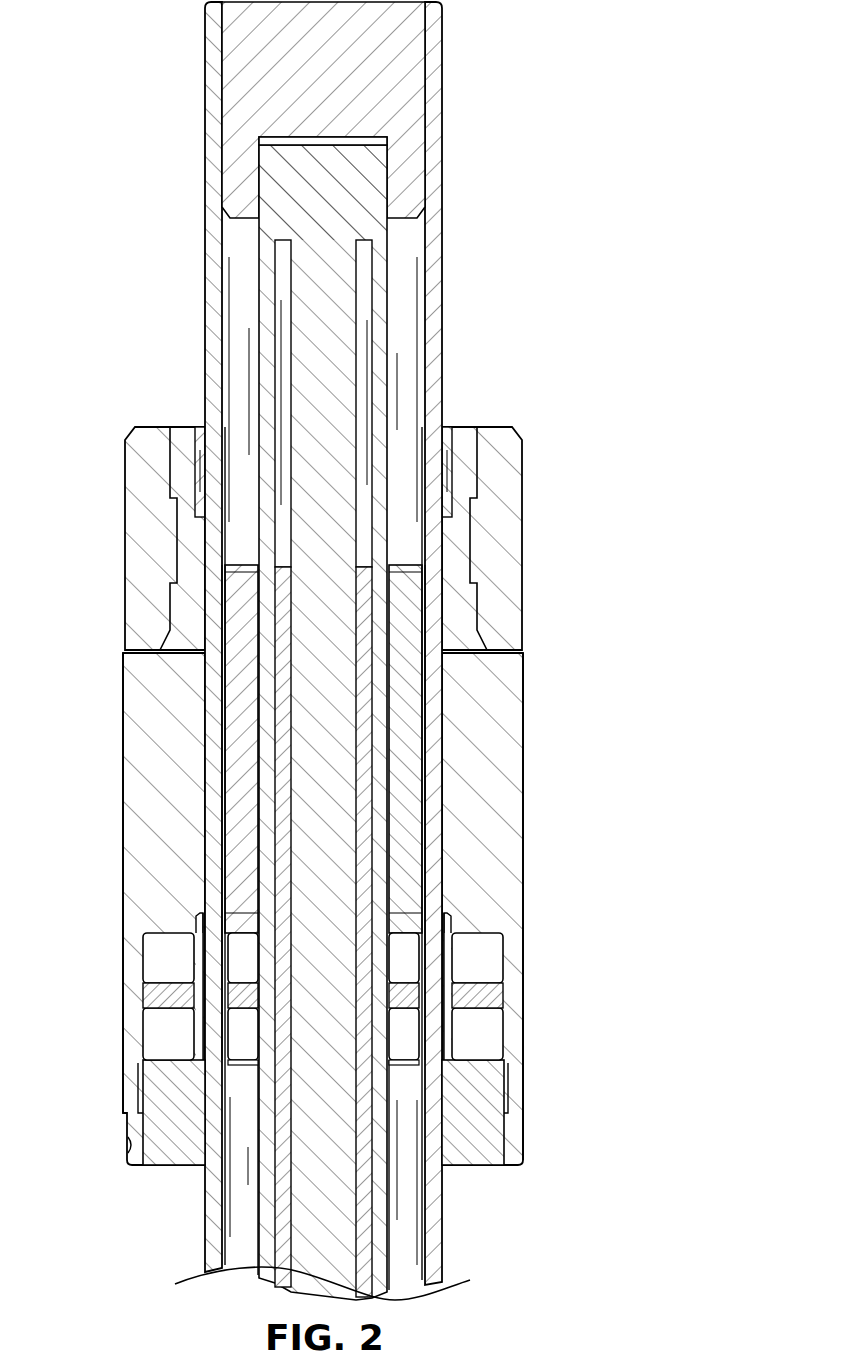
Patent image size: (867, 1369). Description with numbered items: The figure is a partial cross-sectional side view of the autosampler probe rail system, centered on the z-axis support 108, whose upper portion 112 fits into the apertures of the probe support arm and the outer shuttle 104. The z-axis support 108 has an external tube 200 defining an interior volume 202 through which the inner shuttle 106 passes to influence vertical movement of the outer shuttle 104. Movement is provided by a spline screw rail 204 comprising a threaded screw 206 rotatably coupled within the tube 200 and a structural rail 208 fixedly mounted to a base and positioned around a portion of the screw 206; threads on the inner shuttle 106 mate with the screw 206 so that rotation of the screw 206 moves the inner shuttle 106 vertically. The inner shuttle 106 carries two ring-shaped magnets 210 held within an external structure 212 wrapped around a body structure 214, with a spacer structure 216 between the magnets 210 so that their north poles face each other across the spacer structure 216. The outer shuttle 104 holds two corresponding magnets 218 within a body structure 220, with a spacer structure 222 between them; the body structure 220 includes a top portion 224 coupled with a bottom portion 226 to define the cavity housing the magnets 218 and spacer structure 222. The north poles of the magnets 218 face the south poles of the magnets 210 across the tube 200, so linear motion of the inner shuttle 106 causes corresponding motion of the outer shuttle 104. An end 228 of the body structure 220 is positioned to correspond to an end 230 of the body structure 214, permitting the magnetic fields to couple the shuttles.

The outer shuttle 104 is at (123, 722).
The inner shuttle 106 is at (237, 612).
The z-axis support 108 is at (205, 233).
The upper portion 112 is at (408, 23).
The external tube 200 is at (432, 327).
The interior volume 202 is at (408, 240).
The spline screw rail 204 is at (360, 213).
The threaded screw 206 is at (337, 847).
The structural rail 208 is at (385, 750).
The magnets 210 is at (422, 933).
The external structure 212 is at (422, 868).
The body structure 214 is at (410, 597).
The spacer structure 216 is at (412, 995).
The magnets 218 is at (152, 952).
The body structure 220 is at (135, 801).
The spacer structure 222 is at (152, 998).
The top portion 224 is at (128, 894).
The bottom portion 226 is at (154, 1155).
The end 228 is at (128, 1150).
The end 230 is at (230, 1063).